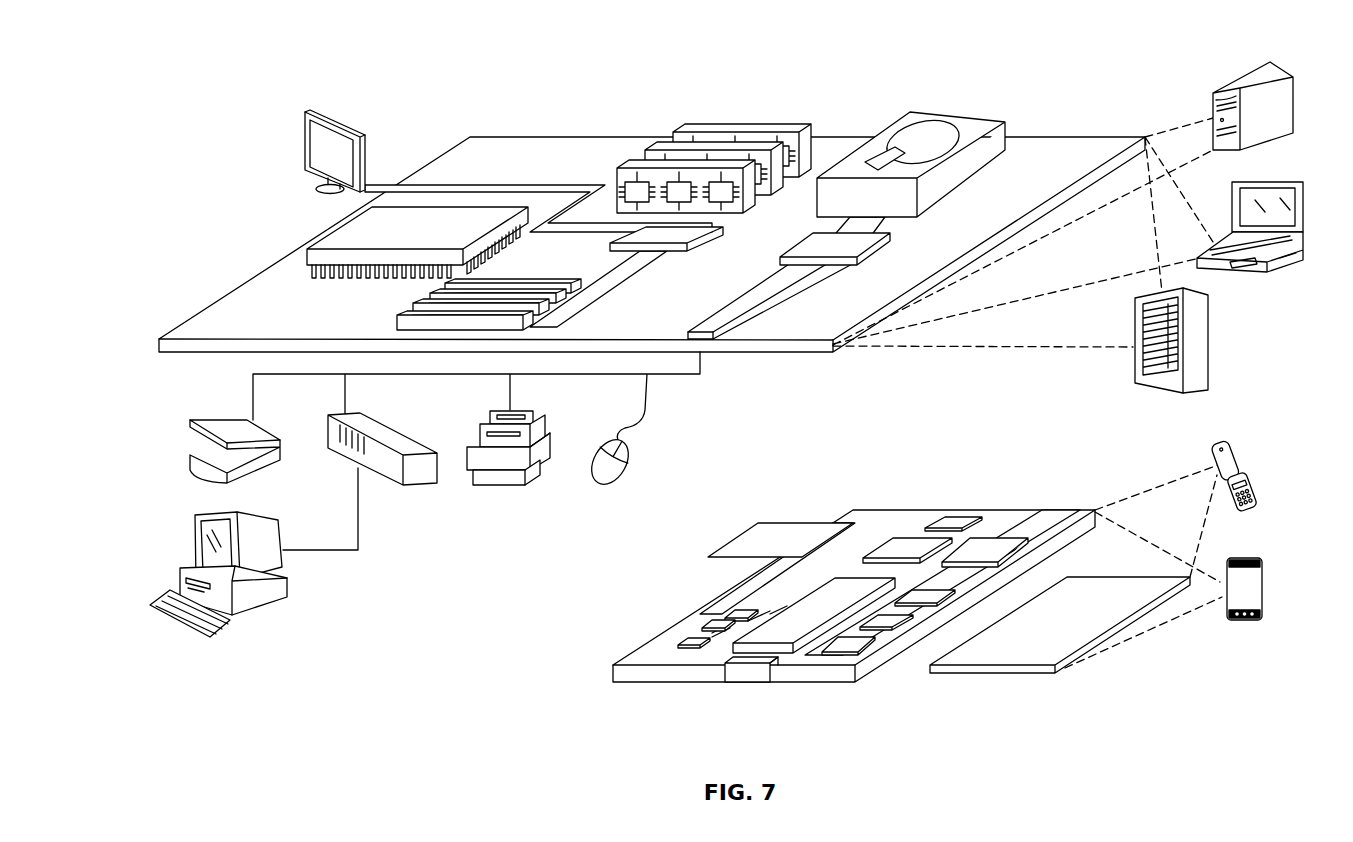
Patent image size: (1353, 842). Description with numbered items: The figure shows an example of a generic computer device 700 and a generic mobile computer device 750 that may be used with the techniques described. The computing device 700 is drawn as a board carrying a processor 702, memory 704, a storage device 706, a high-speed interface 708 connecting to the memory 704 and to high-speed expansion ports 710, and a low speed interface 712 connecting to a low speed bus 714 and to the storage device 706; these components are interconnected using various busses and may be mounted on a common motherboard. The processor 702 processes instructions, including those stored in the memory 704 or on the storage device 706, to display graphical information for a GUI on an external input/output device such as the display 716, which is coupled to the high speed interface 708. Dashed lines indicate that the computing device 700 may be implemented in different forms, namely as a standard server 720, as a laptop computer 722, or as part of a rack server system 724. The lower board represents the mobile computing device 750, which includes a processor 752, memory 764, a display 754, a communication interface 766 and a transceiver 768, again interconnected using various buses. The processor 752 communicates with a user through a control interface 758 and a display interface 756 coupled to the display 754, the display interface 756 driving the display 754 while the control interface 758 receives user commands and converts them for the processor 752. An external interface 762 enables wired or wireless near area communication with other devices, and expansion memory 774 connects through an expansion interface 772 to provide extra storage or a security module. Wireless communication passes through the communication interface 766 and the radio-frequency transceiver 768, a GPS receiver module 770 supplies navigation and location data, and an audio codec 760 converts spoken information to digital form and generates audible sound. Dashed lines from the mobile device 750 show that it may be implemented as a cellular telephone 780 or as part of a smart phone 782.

The computing device 700 is at (426, 88).
The processor 702 is at (334, 238).
The memory 704 is at (741, 131).
The storage device 706 is at (956, 113).
The high-speed interface 708 is at (684, 240).
The high-speed expansion ports 710 is at (423, 308).
The low speed interface 712 is at (813, 241).
The low speed bus 714 is at (707, 325).
The display 716 is at (313, 111).
The standard server 720 is at (1233, 89).
The laptop computer 722 is at (1284, 180).
The rack server system 724 is at (1210, 342).
The mobile computer device 750 is at (578, 686).
The processor 752 is at (783, 620).
The display 754 is at (1092, 589).
The display interface 756 is at (858, 643).
The control interface 758 is at (887, 618).
The audio codec 760 is at (926, 591).
The external interface 762 is at (748, 670).
The memory 764 is at (712, 627).
The communication interface 766 is at (907, 541).
The transceiver 768 is at (991, 541).
The GPS receiver module 770 is at (953, 516).
The expansion interface 772 is at (837, 520).
The expansion memory 774 is at (760, 520).
The cellular telephone 780 is at (1230, 442).
The smart phone 782 is at (1237, 558).